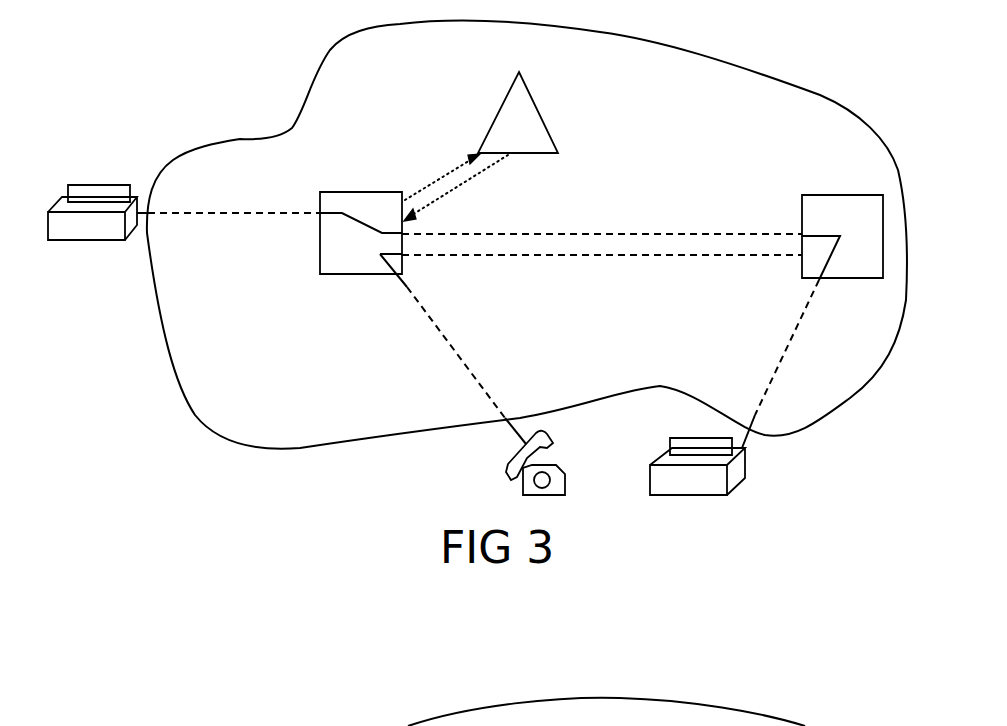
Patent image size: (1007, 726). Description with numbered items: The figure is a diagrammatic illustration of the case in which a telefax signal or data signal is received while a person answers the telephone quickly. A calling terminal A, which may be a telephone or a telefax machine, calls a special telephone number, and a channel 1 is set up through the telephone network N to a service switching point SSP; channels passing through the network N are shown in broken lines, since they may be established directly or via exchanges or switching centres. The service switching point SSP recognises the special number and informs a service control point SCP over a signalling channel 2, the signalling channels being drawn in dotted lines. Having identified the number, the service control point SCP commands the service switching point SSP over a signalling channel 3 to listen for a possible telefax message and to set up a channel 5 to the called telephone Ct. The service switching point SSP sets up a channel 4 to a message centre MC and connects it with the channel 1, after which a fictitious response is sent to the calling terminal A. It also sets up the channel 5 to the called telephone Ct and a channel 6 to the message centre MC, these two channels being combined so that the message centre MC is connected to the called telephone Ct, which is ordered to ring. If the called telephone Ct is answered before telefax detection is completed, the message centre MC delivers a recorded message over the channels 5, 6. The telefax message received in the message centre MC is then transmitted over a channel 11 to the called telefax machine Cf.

The telephone network N is at (172, 162).
The calling terminal A is at (108, 185).
The channel 1 is at (212, 212).
The service switching point SSP is at (340, 192).
The service control point SCP is at (538, 113).
The signalling channel 2 is at (442, 175).
The signalling channel 3 is at (474, 183).
The channel 4 is at (627, 232).
The channel 6 is at (622, 257).
The message centre MC is at (810, 195).
The channel 5 is at (455, 352).
The channel 11 is at (784, 356).
The called telephone Ct is at (512, 481).
The called telefax machine Cf is at (660, 496).